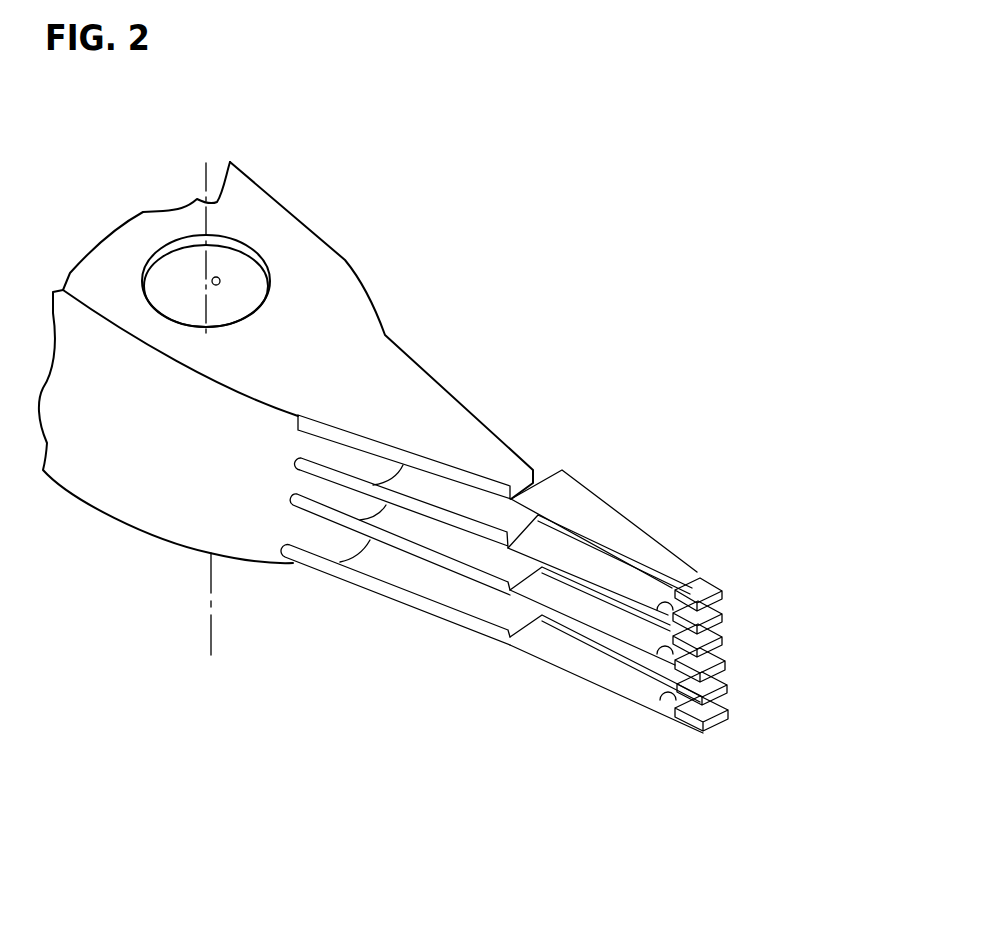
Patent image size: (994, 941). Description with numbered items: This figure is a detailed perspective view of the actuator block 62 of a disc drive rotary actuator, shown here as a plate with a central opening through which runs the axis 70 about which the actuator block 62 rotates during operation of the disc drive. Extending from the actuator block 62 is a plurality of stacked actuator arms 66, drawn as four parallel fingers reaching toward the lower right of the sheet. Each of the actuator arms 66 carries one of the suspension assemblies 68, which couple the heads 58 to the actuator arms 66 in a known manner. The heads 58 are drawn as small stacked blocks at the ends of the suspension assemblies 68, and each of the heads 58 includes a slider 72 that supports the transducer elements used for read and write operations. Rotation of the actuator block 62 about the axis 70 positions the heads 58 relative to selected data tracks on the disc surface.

The actuator block 62 is at (317, 284).
The axis 70 is at (203, 182).
The actuator arms 66 is at (503, 465).
The suspension assemblies 68 is at (610, 670).
The heads 58 is at (705, 613).
The slider 72 is at (700, 577).